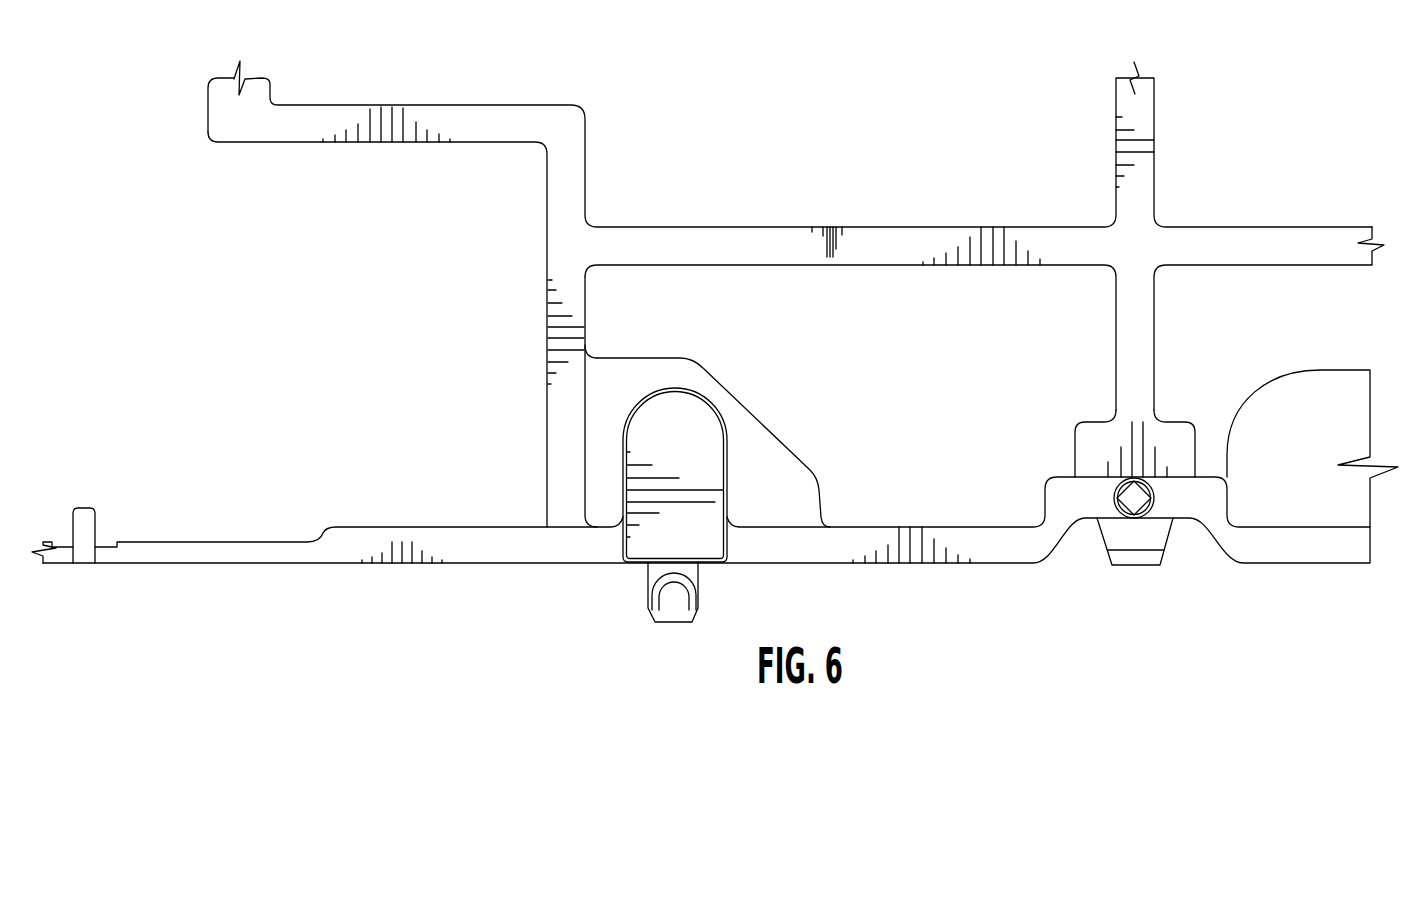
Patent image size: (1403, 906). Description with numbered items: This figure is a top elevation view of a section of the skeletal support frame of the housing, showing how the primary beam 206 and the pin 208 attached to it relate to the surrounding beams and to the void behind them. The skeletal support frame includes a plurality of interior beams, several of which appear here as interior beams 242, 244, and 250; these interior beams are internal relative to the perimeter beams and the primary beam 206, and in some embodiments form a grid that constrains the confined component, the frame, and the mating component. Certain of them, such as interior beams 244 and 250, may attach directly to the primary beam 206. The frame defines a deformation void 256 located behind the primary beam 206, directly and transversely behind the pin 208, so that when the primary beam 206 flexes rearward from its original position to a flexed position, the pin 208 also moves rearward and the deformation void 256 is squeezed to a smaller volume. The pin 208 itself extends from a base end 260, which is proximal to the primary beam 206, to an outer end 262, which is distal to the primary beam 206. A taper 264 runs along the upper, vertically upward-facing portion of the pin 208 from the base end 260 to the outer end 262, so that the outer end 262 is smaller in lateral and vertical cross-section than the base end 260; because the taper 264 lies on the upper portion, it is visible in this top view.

The primary beam 206 is at (790, 548).
The pin 208 is at (648, 568).
The interior beam 242 is at (793, 243).
The interior beam 244 is at (1142, 145).
The interior beam 250 is at (372, 118).
The deformation void 256 is at (702, 324).
The base end 260 is at (704, 566).
The outer end 262 is at (673, 624).
The taper 264 is at (671, 597).